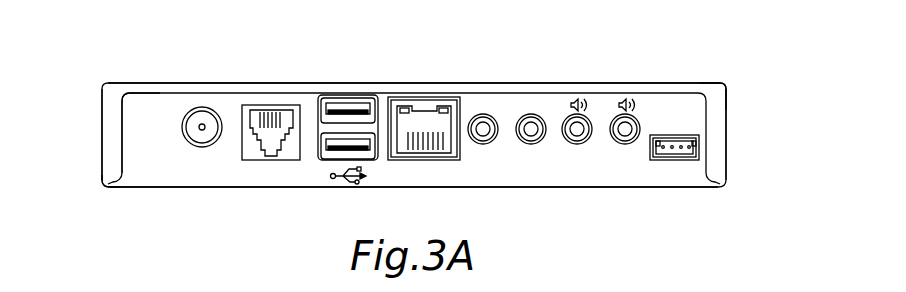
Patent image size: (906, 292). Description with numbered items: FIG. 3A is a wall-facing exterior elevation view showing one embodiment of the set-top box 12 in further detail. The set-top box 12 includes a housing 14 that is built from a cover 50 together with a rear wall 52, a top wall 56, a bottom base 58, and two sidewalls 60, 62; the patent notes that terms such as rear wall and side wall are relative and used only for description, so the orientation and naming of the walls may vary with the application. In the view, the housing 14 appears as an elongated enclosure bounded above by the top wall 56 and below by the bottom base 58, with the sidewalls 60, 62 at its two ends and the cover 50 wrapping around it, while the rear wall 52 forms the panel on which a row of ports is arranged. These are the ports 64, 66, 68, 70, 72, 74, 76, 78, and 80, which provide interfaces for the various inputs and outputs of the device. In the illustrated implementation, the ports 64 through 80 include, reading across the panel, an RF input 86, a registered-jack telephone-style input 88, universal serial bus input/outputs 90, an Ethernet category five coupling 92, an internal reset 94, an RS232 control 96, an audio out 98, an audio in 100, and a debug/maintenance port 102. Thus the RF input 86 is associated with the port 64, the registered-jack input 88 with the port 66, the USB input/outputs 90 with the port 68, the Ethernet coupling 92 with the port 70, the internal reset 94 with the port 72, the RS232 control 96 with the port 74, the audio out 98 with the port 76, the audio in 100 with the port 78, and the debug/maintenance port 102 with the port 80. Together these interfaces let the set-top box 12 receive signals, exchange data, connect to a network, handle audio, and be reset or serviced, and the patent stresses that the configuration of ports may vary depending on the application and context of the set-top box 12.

The set-top box 12 is at (108, 66).
The housing 14 is at (110, 187).
The cover 50 is at (705, 83).
The rear wall 52 is at (142, 175).
The top wall 56 is at (172, 83).
The bottom base 58 is at (288, 188).
The sidewall 60 is at (726, 125).
The sidewall 62 is at (102, 128).
The port 64 is at (203, 107).
The port 66 is at (272, 110).
The port 68 is at (352, 96).
The port 70 is at (428, 98).
The port 72 is at (485, 114).
The port 74 is at (535, 114).
The port 76 is at (580, 114).
The port 78 is at (628, 114).
The port 80 is at (676, 160).
The RF input 86 is at (202, 148).
The RJ-45 input 88 is at (252, 162).
The universal serial bus (USB) input/outputs 90 is at (343, 168).
The Ethernet category 5 (Cat 5) coupling 92 is at (424, 162).
The internal reset 94 is at (485, 152).
The RS232 control 96 is at (532, 152).
The audio out 98 is at (580, 152).
The audio in 100 is at (628, 152).
The debug/maintenance port 102 is at (699, 152).